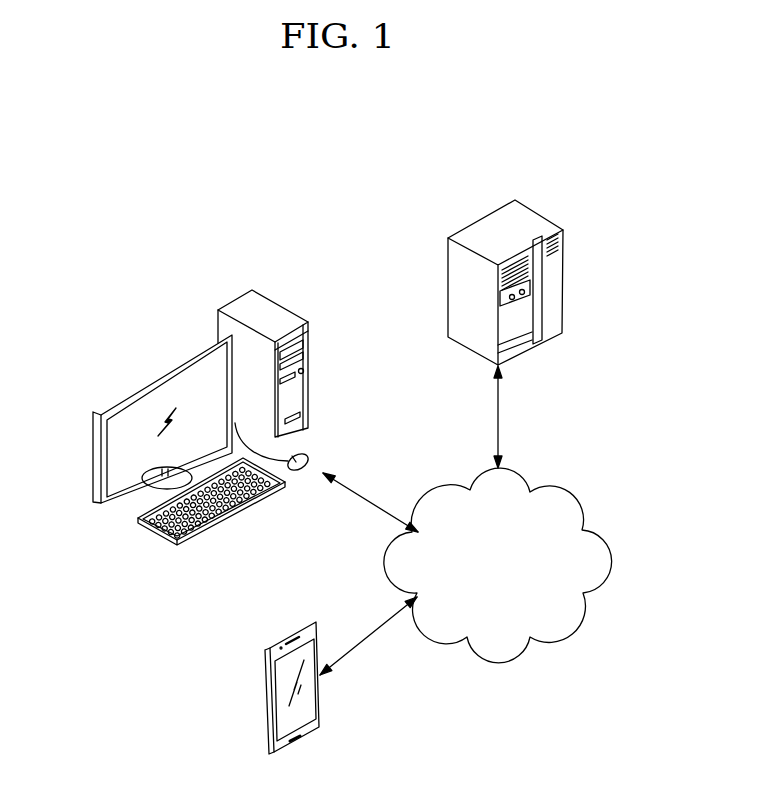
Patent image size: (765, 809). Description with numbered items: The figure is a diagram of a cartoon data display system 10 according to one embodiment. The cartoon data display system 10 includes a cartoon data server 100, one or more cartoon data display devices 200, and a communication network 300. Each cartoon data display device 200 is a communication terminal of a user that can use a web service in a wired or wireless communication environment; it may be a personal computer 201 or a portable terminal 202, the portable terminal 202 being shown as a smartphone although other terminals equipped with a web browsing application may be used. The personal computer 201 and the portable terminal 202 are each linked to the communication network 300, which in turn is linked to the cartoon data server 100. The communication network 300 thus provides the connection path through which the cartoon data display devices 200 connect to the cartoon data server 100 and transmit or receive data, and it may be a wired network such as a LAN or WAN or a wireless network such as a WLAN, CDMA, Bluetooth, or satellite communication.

The cartoon data display system 10 is at (652, 175).
The cartoon data server 100 is at (482, 218).
The cartoon data display device 200 is at (102, 611).
The personal computer 201 is at (162, 533).
The portable terminal 202 is at (267, 698).
The communication network 300 is at (573, 490).